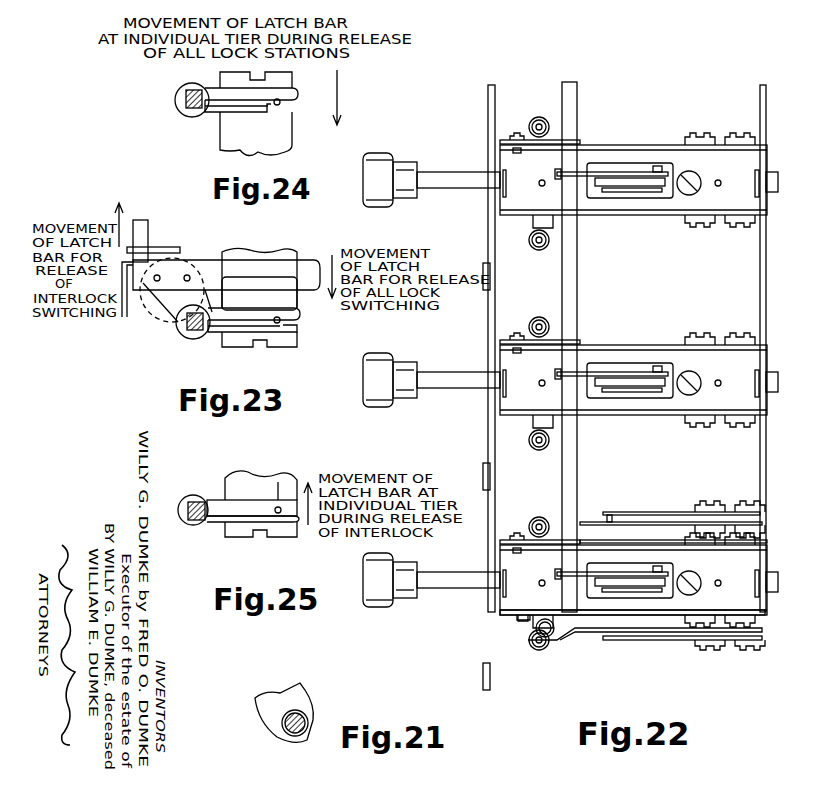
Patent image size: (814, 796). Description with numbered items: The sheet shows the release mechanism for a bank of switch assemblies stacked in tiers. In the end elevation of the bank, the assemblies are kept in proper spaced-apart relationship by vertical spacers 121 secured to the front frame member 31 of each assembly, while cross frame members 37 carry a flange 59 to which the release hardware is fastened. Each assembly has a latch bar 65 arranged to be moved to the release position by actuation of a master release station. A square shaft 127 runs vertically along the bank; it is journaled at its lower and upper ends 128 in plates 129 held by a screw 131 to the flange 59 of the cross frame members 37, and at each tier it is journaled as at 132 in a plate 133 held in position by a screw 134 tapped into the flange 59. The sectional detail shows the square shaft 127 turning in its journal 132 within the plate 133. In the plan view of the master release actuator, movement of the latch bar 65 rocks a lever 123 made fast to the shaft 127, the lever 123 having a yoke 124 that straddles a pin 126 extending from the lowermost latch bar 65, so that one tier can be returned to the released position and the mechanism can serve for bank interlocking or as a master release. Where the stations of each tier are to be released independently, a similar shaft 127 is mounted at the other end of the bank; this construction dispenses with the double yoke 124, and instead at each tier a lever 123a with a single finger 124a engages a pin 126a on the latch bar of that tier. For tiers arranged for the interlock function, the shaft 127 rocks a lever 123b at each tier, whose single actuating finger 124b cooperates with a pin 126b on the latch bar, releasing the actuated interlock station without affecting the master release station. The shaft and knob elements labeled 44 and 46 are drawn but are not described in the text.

In FIG. 22, the front frame member 31 is at (493, 203).
In FIG. 22, the cross frame member 37 is at (750, 157).
In FIG. 22, the shaft 44 is at (466, 392).
In FIG. 22, the knob 46 is at (395, 402).
In FIG. 22, the flange 59 is at (640, 343).
In FIG. 24, the latch bar 65 is at (292, 142).
In FIG. 23, the latch bar 65 is at (287, 287).
In FIG. 25, the latch bar 65 is at (230, 482).
In FIG. 22, the latch bar 65 is at (640, 178).
In FIG. 22, the vertical spacer 121 is at (488, 238).
In FIG. 23, the lever 123 is at (257, 318).
In FIG. 22, the lever 123 is at (615, 172).
In FIG. 24, the lever 123a is at (233, 105).
In FIG. 25, the lever 123b is at (237, 522).
In FIG. 23, the yoke 124 is at (300, 332).
In FIG. 24, the single finger 124a is at (285, 88).
In FIG. 25, the single actuating finger 124b is at (287, 525).
In FIG. 23, the pin 126 is at (283, 325).
In FIG. 22, the pin 126 is at (662, 170).
In FIG. 24, the pin 126a is at (281, 104).
In FIG. 25, the pin 126b is at (281, 505).
In FIG. 24, the square shaft 127 is at (175, 100).
In FIG. 23, the square shaft 127 is at (193, 340).
In FIG. 25, the square shaft 127 is at (197, 525).
In FIG. 21, the square shaft 127 is at (298, 733).
In FIG. 22, the square shaft 127 is at (572, 252).
In FIG. 22, the lower and upper ends 128 is at (575, 630).
In FIG. 23, the plate 129 is at (143, 285).
In FIG. 22, the plate 129 is at (544, 640).
In FIG. 23, the screw 131 is at (157, 275).
In FIG. 22, the screw 131 is at (520, 620).
In FIG. 21, the journal 132 is at (285, 730).
In FIG. 22, the journal 132 is at (577, 341).
In FIG. 21, the plate 133 is at (305, 695).
In FIG. 22, the plate 133 is at (541, 117).
In FIG. 22, the screw 134 is at (513, 134).